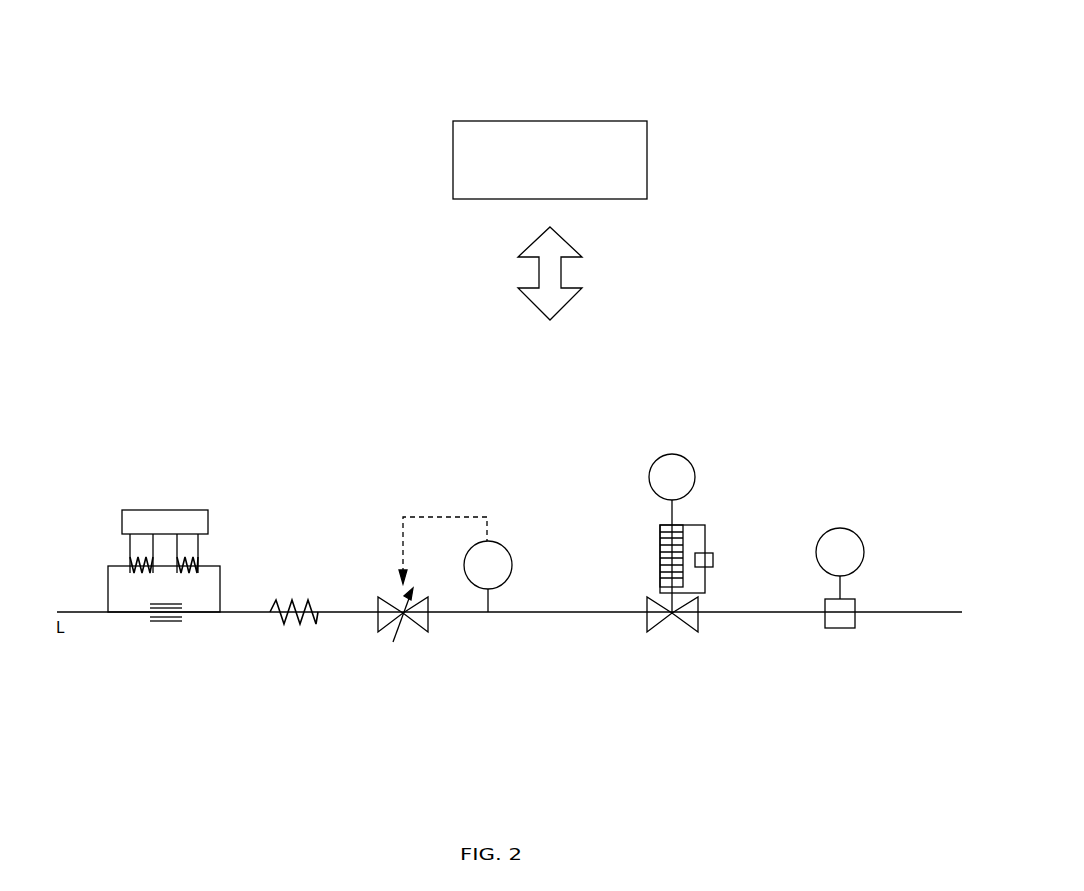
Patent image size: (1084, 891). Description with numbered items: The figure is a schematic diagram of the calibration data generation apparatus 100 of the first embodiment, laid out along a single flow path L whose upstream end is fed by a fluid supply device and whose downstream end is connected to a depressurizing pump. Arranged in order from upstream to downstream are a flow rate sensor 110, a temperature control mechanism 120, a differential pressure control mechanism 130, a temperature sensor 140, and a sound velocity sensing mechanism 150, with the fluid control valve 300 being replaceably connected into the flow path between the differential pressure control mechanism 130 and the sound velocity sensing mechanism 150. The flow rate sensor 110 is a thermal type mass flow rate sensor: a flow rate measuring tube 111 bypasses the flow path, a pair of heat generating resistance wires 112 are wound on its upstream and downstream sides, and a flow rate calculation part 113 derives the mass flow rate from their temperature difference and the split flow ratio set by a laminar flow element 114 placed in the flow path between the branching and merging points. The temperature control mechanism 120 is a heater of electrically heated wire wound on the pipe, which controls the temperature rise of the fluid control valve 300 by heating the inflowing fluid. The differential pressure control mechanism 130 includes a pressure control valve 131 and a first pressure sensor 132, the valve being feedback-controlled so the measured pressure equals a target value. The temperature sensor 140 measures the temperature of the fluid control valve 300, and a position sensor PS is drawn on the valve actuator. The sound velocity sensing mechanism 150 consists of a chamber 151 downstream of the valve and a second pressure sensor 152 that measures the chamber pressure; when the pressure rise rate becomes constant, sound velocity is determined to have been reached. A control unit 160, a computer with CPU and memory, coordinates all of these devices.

The calibration data generation apparatus 100 is at (778, 83).
The control unit 160 is at (453, 121).
The flow rate sensor 110 is at (164, 552).
The flow rate measuring tube 111 is at (108, 582).
The heat generating resistance wires 112 is at (153, 548).
The flow rate calculation part 113 is at (122, 513).
The laminar flow element 114 is at (168, 625).
The temperature control mechanism 120 is at (295, 625).
The differential pressure control mechanism 130 is at (474, 562).
The pressure control valve 131 is at (418, 632).
The first pressure sensor 132 is at (511, 553).
The temperature sensor 140 is at (654, 462).
The fluid control valve 300 is at (690, 519).
The position sensor PS is at (713, 560).
The sound velocity sensing mechanism 150 is at (876, 566).
The chamber 151 is at (840, 628).
The second pressure sensor 152 is at (840, 500).